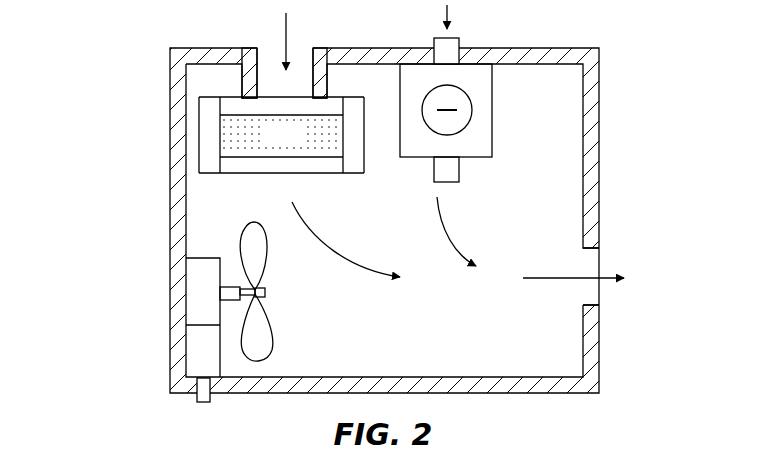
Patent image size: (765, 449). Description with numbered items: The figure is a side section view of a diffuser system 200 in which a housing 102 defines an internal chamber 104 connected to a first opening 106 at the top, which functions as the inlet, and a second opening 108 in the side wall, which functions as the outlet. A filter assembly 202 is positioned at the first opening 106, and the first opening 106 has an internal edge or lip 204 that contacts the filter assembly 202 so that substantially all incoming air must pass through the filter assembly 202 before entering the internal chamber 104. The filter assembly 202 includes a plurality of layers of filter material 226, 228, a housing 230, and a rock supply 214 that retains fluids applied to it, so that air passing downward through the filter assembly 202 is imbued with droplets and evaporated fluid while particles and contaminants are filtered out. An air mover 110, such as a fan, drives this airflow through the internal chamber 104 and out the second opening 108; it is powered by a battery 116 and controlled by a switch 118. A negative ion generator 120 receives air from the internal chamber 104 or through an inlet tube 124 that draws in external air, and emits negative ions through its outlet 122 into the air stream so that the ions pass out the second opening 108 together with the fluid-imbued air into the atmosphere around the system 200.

The system 200 is at (98, 94).
The housing 102 is at (605, 133).
The internal chamber 104 is at (551, 349).
The first opening 106 is at (258, 50).
The second opening 108 is at (598, 300).
The air mover 110 is at (250, 237).
The battery 116 is at (198, 353).
The switch 118 is at (198, 405).
The negative ion generator 120 is at (480, 75).
The outlet 122 is at (460, 170).
The inlet tube 124 is at (450, 38).
The filter assembly 202 is at (189, 134).
The lip 204 is at (322, 88).
The rock supply 214 is at (270, 142).
The layer of filter material 226 is at (235, 105).
The layer of filter material 228 is at (313, 173).
The housing 230 is at (360, 160).